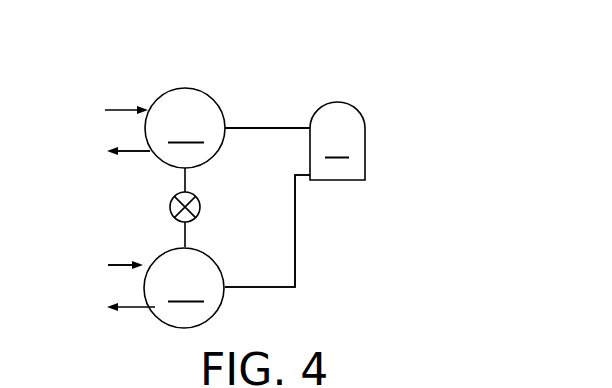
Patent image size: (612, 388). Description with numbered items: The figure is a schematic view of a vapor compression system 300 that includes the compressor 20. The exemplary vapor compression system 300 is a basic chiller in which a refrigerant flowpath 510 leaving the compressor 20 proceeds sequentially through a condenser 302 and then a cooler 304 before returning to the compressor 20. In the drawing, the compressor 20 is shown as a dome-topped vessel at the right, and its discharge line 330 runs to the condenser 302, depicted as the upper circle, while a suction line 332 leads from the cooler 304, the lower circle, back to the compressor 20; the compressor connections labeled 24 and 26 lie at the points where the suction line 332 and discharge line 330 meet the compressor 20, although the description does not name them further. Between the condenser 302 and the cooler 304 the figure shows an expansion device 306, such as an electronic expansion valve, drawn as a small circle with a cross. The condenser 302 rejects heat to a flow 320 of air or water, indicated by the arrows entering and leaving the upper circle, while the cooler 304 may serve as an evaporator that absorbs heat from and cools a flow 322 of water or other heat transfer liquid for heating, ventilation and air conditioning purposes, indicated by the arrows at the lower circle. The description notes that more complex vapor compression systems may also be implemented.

The vapor compression system 300 is at (393, 95).
The condenser 302 is at (165, 128).
The cooler 304 is at (165, 288).
The expansion device 306 is at (219, 198).
The compressor 20 is at (337, 141).
The tank outlet 24 is at (302, 185).
The tank inlet 26 is at (308, 128).
The flow of air or water 320 is at (135, 152).
The flow of water or other heat transfer liquid 322 is at (125, 264).
The discharge line 330 is at (277, 128).
The suction line 332 is at (295, 265).
The refrigerant flowpath 510 is at (249, 103).